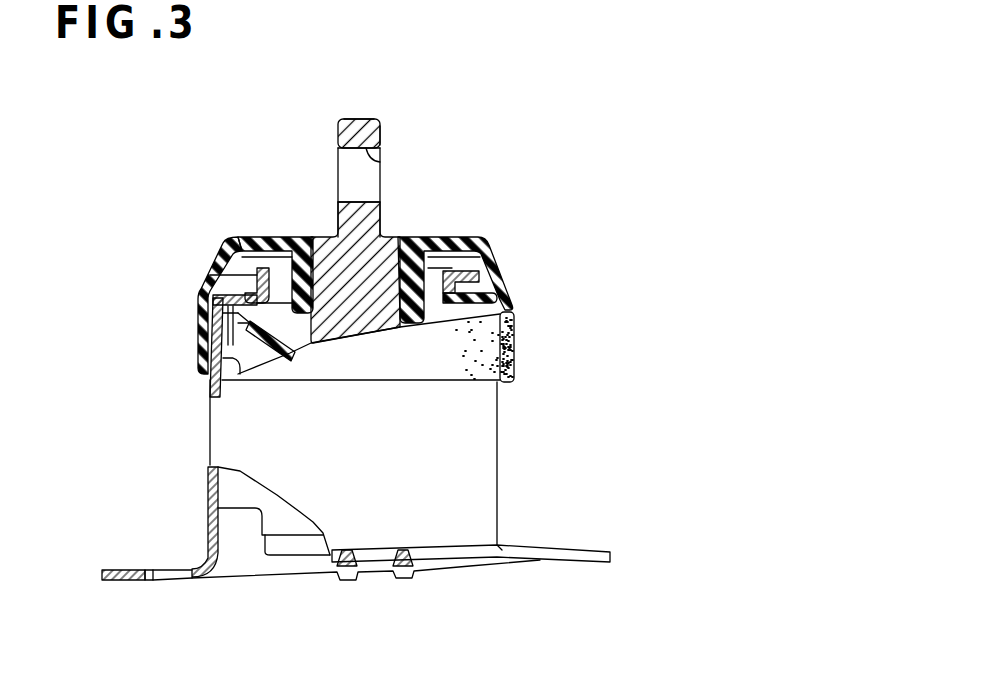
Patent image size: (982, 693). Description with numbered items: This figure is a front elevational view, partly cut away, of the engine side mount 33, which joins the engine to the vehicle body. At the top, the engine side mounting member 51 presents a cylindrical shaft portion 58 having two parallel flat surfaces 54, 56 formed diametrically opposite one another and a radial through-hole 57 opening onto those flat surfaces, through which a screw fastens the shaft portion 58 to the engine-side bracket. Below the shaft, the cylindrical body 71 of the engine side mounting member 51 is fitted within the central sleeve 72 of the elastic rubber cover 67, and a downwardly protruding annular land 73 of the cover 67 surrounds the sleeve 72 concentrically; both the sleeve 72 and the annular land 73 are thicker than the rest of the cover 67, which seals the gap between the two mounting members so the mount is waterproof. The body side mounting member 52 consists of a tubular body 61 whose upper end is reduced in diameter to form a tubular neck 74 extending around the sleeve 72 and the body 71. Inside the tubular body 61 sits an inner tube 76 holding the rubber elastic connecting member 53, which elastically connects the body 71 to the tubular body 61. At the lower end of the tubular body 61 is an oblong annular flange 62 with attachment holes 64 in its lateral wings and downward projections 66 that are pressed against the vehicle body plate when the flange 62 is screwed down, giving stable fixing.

The engine side mount 33 is at (140, 213).
The engine side mounting member 51 is at (335, 162).
The body side mounting member 52 is at (207, 486).
The elastic connecting member 53 is at (217, 356).
The flat surface 54 is at (337, 147).
The flat surface 56 is at (383, 135).
The radial through-hole 57 is at (381, 165).
The cylindrical shaft portion 58 is at (358, 119).
The tubular body 61 is at (496, 444).
The annular flange 62 is at (566, 552).
The attachment hole 64 is at (150, 576).
The projection 66 is at (348, 580).
The cover 67 is at (195, 310).
The cylindrical body 71 is at (355, 262).
The central sleeve 72 is at (283, 272).
The annular land 73 is at (490, 265).
The tubular neck 74 is at (257, 270).
The inner tube 76 is at (248, 509).